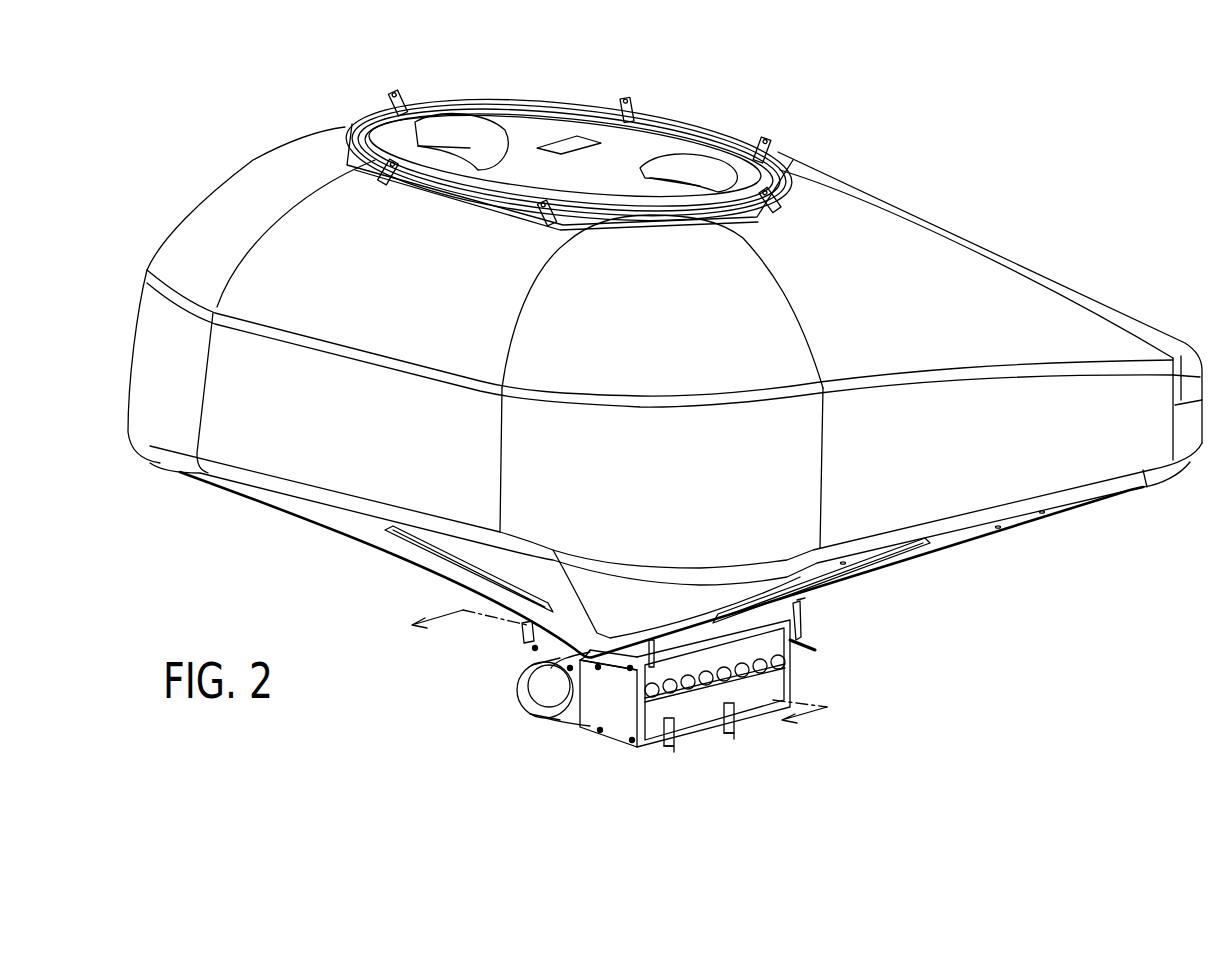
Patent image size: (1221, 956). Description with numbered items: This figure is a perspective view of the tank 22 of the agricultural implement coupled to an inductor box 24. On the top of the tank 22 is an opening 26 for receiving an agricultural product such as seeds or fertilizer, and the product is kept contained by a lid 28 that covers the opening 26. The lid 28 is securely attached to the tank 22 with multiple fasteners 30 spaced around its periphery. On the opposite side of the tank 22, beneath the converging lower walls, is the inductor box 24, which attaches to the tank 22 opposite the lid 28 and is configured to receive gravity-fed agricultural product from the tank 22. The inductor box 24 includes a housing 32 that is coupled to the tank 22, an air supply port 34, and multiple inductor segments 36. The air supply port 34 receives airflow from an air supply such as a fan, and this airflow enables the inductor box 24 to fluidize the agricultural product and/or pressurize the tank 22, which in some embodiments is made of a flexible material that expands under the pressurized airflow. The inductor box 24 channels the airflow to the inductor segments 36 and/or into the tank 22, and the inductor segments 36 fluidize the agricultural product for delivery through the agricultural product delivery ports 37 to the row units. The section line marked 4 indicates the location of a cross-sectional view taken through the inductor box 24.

The tank 22 is at (961, 159).
The inductor box 24 is at (814, 628).
The opening 26 is at (646, 224).
The lid 28 is at (524, 130).
The fasteners 30 is at (404, 104).
The housing 32 is at (598, 724).
The air supply port 34 is at (527, 693).
The inductor segments 36 is at (700, 697).
The agricultural product delivery ports 37 is at (757, 685).
The section line 4- 4 is at (613, 684).